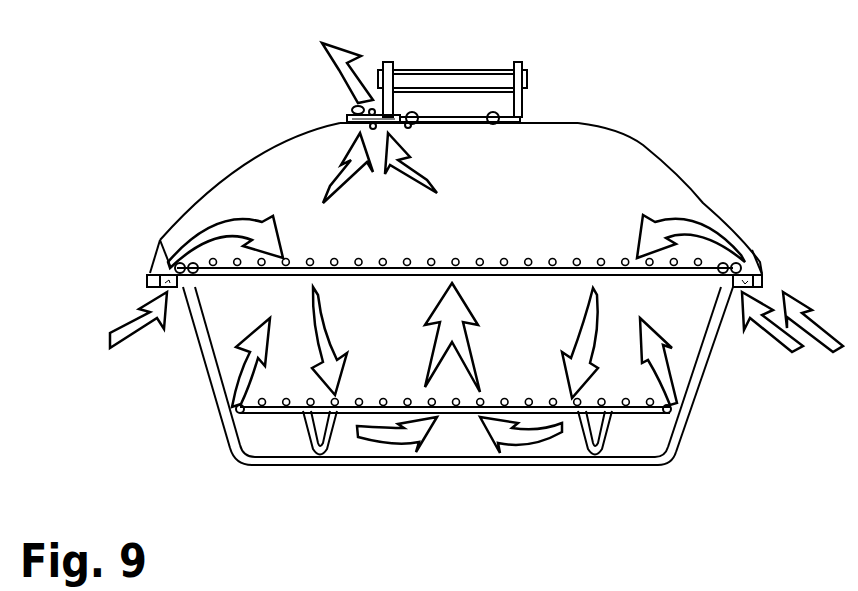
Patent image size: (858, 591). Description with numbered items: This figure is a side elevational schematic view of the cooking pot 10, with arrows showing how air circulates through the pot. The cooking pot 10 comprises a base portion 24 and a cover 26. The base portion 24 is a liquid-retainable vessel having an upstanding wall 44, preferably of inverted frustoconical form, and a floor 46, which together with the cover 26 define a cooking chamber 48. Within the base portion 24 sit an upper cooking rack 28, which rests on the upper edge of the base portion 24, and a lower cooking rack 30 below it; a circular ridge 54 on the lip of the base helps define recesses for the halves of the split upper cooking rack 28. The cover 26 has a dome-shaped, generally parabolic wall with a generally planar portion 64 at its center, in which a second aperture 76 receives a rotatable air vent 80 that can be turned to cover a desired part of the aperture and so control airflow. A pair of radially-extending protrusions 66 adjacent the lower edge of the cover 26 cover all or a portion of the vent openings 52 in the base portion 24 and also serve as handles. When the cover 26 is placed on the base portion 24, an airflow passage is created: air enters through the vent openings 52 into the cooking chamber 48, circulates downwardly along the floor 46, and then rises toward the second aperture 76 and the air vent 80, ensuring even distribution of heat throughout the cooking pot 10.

The cooking pot 10 is at (727, 150).
The base portion 24 is at (708, 385).
The cover 26 is at (643, 145).
The upper cooking rack 28 is at (493, 257).
The lower cooking rack 30 is at (521, 397).
The upstanding wall 44 is at (226, 362).
The floor 46 is at (442, 466).
The cooking chamber 48 is at (505, 318).
The vent openings 52 is at (167, 273).
The circular ridge 54 is at (196, 247).
The planar portion 64 is at (578, 122).
The protrusions 66 is at (158, 247).
The second aperture 76 is at (390, 125).
The air vent 80 is at (399, 112).